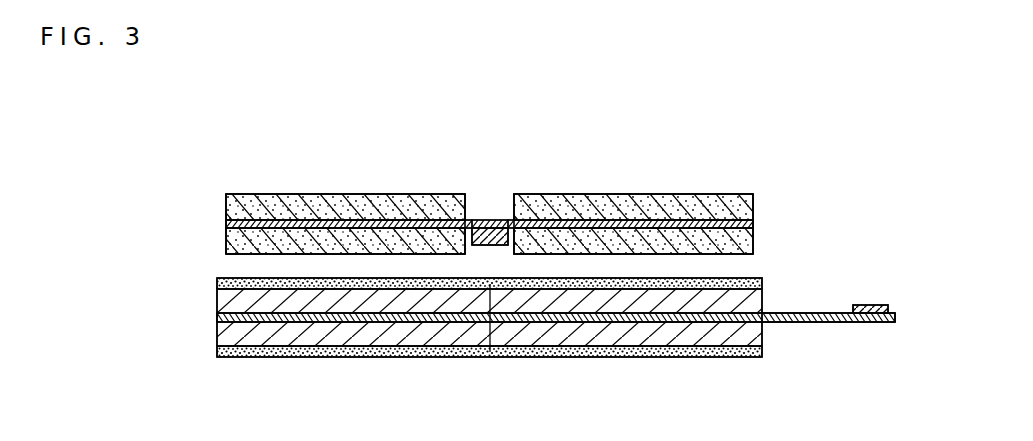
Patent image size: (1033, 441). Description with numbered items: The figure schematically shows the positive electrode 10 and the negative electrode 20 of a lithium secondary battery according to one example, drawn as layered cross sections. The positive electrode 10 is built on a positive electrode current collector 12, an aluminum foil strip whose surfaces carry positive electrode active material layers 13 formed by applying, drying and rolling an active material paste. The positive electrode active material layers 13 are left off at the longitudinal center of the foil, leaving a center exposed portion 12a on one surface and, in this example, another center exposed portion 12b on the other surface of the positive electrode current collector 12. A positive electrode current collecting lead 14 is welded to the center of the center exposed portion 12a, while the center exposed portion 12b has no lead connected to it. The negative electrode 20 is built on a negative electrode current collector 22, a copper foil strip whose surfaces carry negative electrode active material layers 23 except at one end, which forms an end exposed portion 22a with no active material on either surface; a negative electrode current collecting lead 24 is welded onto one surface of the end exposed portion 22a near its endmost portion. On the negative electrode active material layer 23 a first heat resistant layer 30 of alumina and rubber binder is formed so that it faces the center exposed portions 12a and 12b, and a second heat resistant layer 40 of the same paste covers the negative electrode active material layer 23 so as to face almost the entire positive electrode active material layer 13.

The positive electrode 10 is at (699, 178).
The positive electrode active material layers 13 is at (226, 200).
The positive electrode current collector 12 is at (755, 226).
The center exposed portion 12a is at (452, 229).
The center exposed portion 12b is at (503, 223).
The positive electrode current collecting lead 14 is at (487, 232).
The negative electrode 20 is at (204, 342).
The second heat resistant layer 40 is at (220, 282).
The negative electrode active material layers 23 is at (748, 300).
The negative electrode current collector 22 is at (222, 318).
The end exposed portion 22a is at (810, 313).
The negative electrode current collecting lead 24 is at (882, 305).
The first heat resistant layer 30 is at (490, 284).